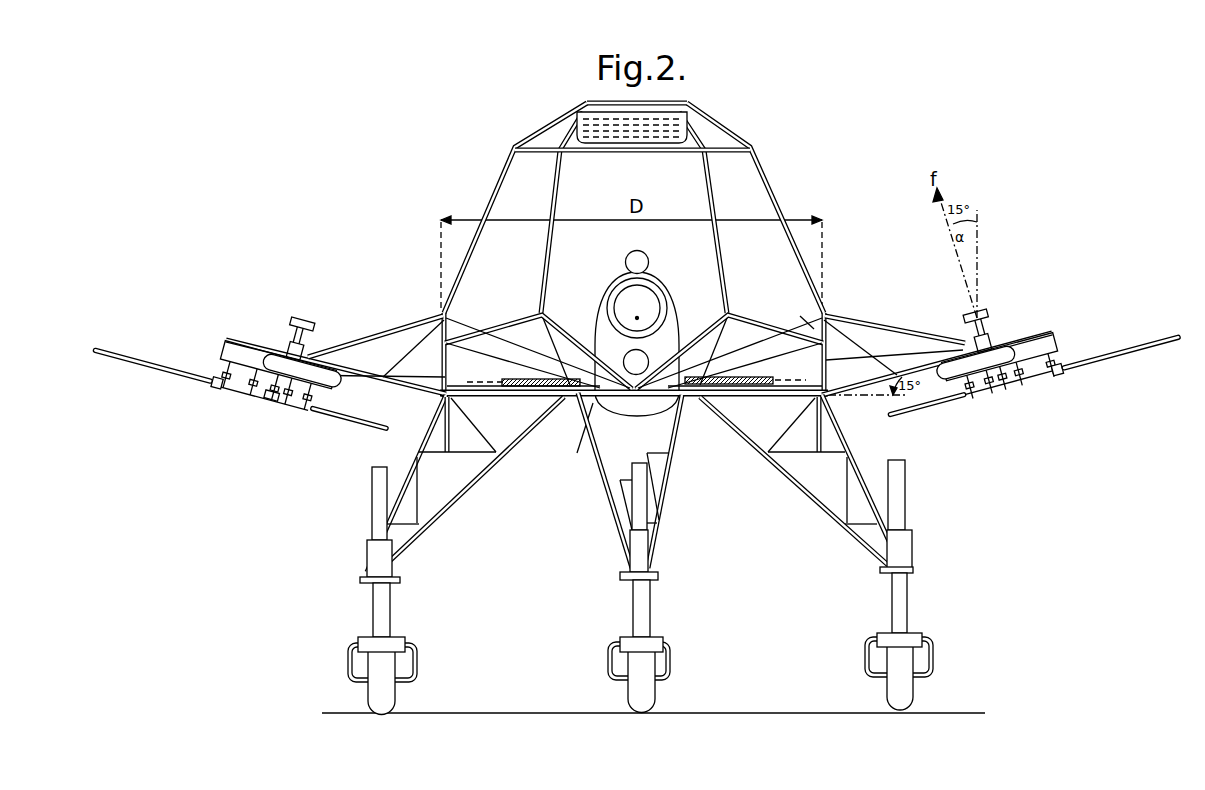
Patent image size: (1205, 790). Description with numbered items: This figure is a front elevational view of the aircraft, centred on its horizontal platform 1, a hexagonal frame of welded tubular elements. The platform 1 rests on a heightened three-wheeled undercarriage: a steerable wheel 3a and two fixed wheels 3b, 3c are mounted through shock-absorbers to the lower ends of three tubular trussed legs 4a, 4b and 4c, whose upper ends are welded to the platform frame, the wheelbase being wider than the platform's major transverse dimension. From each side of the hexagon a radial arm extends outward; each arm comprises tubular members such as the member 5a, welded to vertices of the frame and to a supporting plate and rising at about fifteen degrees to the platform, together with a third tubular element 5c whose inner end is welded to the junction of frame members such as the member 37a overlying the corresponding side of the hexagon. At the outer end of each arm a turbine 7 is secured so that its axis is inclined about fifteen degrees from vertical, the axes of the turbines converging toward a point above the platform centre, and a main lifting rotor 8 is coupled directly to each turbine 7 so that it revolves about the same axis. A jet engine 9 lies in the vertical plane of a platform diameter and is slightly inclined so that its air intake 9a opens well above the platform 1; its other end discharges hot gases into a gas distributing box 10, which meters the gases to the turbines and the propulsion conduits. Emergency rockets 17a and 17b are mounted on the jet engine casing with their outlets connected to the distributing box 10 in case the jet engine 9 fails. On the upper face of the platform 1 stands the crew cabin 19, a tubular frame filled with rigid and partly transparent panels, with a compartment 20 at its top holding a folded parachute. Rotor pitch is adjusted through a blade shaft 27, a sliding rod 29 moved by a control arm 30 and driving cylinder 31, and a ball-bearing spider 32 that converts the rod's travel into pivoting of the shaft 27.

The horizontal platform 1 is at (538, 398).
The steerable wheel 3a is at (654, 690).
The fixed wheel 3b is at (911, 692).
The fixed wheel 3c is at (394, 692).
The leg 4a is at (664, 477).
The leg 4b is at (807, 478).
The leg 4c is at (463, 482).
The tubular member 5a is at (860, 384).
The third tubular element 5c is at (877, 324).
The turbine 7 is at (1031, 336).
The main lifting rotor 8 is at (1093, 358).
The jet engine 9 is at (665, 293).
The air intake 9a is at (637, 308).
The gas distributing box 10 is at (576, 440).
The rocket 17a is at (629, 254).
The rocket 17b is at (629, 356).
The cockpit or crew cabin 19 is at (763, 160).
The compartment 20 is at (583, 112).
The shaft 27 is at (240, 392).
The rod 29 is at (288, 337).
The control arm 30 is at (300, 328).
The driving cylinder 31 is at (313, 343).
The ball-bearing spider 32 is at (275, 408).
The tubular frame member 37a is at (784, 316).